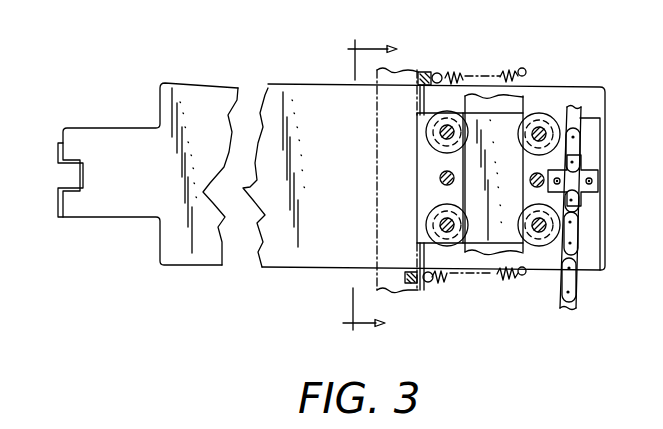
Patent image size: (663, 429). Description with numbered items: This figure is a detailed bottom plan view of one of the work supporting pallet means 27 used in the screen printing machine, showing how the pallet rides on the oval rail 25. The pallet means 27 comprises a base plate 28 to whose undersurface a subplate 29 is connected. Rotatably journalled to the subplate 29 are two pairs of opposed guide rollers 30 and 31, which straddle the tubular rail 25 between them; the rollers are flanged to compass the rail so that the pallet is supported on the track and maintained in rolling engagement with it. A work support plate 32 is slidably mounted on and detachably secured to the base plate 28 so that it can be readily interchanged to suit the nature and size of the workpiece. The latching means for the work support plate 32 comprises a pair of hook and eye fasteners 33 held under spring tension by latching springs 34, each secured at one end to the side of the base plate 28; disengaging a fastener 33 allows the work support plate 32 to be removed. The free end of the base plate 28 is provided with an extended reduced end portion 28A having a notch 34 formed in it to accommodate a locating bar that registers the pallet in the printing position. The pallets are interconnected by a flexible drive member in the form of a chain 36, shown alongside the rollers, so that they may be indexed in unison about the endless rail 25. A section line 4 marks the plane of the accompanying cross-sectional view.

The section line 4- 4 is at (370, 188).
The oval rail 25 is at (497, 257).
The pallet means 27 is at (537, 49).
The base plate 28 is at (312, 268).
The extended reduced end portion 28A is at (115, 216).
The subplate 29 is at (427, 181).
The guide rollers 30 is at (430, 143).
The guide rollers 31 is at (545, 110).
The work support plate 32 is at (402, 70).
The hook and eye fasteners 33 is at (455, 73).
The latching springs 34 is at (66, 180).
The chain 36 is at (584, 126).